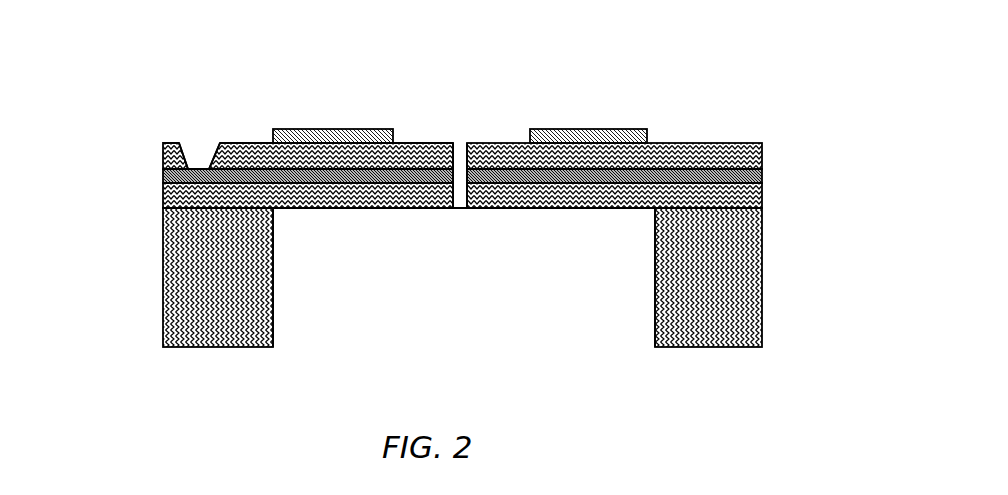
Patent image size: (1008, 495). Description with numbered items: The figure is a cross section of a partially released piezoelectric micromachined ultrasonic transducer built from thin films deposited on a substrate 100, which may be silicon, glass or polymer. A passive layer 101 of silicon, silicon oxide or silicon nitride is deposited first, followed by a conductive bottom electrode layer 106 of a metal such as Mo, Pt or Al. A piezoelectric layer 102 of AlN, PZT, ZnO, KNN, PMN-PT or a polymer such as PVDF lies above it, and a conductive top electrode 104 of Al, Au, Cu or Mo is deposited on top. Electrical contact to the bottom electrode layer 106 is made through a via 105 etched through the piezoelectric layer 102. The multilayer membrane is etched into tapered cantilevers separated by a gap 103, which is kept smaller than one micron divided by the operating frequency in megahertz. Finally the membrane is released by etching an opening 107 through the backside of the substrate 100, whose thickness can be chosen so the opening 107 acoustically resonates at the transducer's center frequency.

The substrate 100 is at (770, 323).
The passive layer 101 is at (775, 202).
The piezoelectric layer 102 is at (728, 128).
The gap 103 is at (463, 132).
The top electrode 104 is at (358, 121).
The via 105 is at (197, 147).
The bottom electrode layer 106 is at (152, 176).
The opening 107 is at (462, 305).